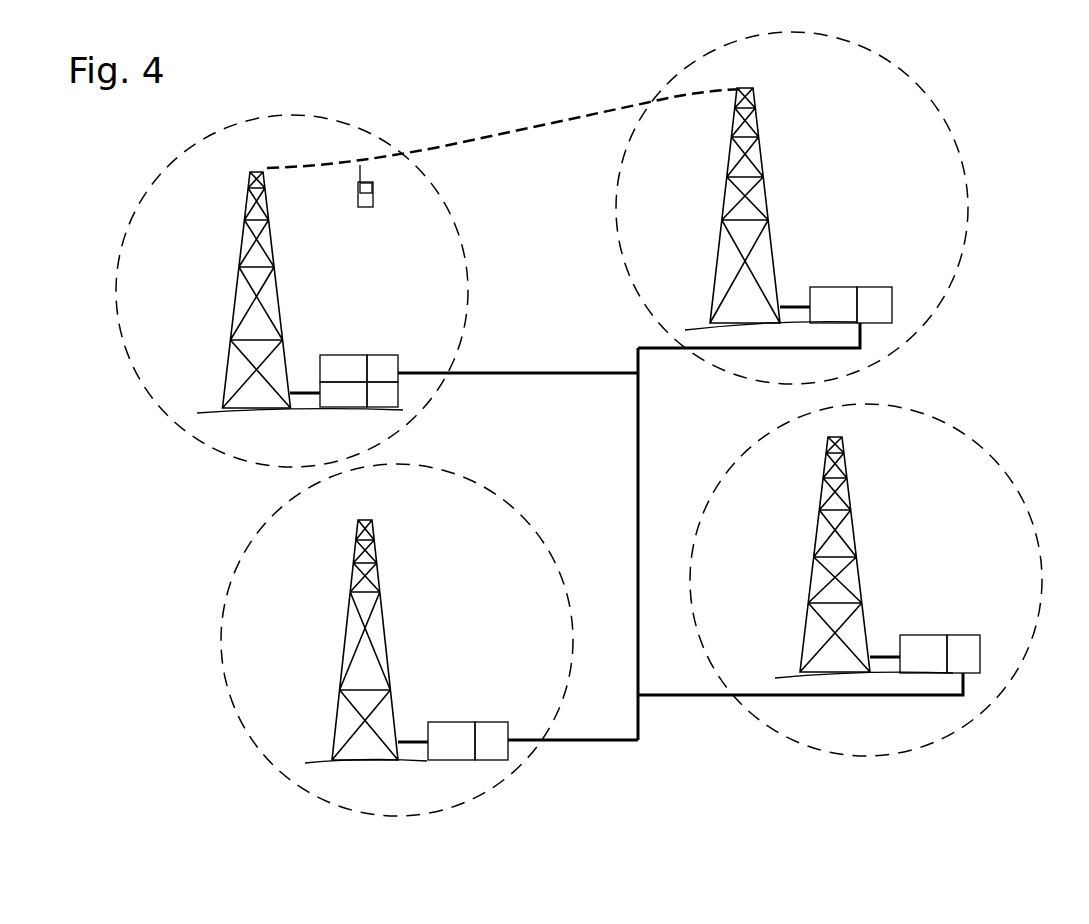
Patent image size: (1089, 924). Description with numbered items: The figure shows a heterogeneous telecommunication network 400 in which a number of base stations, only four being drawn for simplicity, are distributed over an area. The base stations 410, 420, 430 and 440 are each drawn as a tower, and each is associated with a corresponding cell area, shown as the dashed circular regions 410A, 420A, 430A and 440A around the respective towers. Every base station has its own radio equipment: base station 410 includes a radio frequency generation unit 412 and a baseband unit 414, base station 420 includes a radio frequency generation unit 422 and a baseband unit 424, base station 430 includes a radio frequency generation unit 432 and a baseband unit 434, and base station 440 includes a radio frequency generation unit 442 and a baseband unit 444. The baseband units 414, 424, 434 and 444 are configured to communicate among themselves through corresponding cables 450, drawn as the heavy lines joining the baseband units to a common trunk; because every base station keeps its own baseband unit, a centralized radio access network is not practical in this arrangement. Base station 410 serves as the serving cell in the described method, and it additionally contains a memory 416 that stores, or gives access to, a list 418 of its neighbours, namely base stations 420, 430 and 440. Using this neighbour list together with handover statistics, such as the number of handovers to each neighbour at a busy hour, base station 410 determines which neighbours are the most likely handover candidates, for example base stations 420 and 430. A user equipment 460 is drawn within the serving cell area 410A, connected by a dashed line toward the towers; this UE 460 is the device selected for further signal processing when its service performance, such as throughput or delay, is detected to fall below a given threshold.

The telecommunication network 400 is at (543, 77).
The base station 410 is at (217, 240).
The cell area 410A is at (335, 118).
The radio frequency generation (RFG) unit 412 is at (345, 355).
The baseband unit 414 is at (377, 355).
The memory 416 is at (333, 408).
The list 418 is at (383, 408).
The base station 420 is at (322, 613).
The cell area 420A is at (222, 668).
The radio frequency generation (RFG) unit 422 is at (462, 722).
The baseband unit 424 is at (490, 722).
The base station 430 is at (800, 148).
The cell area 430A is at (922, 87).
The radio frequency generation (RFG) unit 432 is at (838, 287).
The baseband unit 434 is at (872, 287).
The base station 440 is at (873, 510).
The cell area 440A is at (990, 445).
The radio frequency generation (RFG) unit 442 is at (930, 635).
The baseband unit 444 is at (960, 635).
The cables 450 is at (610, 375).
The UE 460 is at (363, 207).